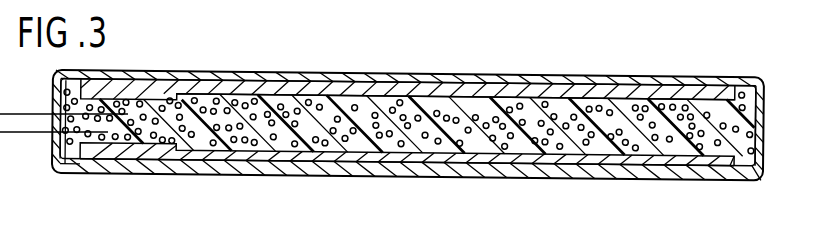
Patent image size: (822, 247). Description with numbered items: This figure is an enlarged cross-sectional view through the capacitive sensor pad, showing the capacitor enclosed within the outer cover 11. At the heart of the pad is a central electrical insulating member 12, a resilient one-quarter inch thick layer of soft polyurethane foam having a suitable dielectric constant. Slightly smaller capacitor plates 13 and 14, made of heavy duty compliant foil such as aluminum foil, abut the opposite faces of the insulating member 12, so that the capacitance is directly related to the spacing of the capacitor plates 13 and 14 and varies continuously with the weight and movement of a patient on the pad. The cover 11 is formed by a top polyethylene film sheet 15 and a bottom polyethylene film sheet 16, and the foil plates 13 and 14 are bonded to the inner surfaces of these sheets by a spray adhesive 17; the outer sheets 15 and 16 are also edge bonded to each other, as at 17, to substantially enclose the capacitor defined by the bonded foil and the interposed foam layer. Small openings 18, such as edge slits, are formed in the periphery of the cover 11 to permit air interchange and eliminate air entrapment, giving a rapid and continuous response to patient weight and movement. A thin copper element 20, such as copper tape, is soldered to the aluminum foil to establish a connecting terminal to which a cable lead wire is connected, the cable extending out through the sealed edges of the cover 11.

The outer cover 11 is at (614, 181).
The central electrical insulating member 12 is at (333, 133).
The capacitor plate 13 is at (407, 92).
The capacitor plate 14 is at (410, 160).
The top polyethylene film sheet 15 is at (233, 72).
The bottom polyethylene film sheet 16 is at (475, 162).
The spray adhesive 17 is at (300, 82).
The small openings 18 is at (762, 158).
The thin copper element 20 is at (147, 150).